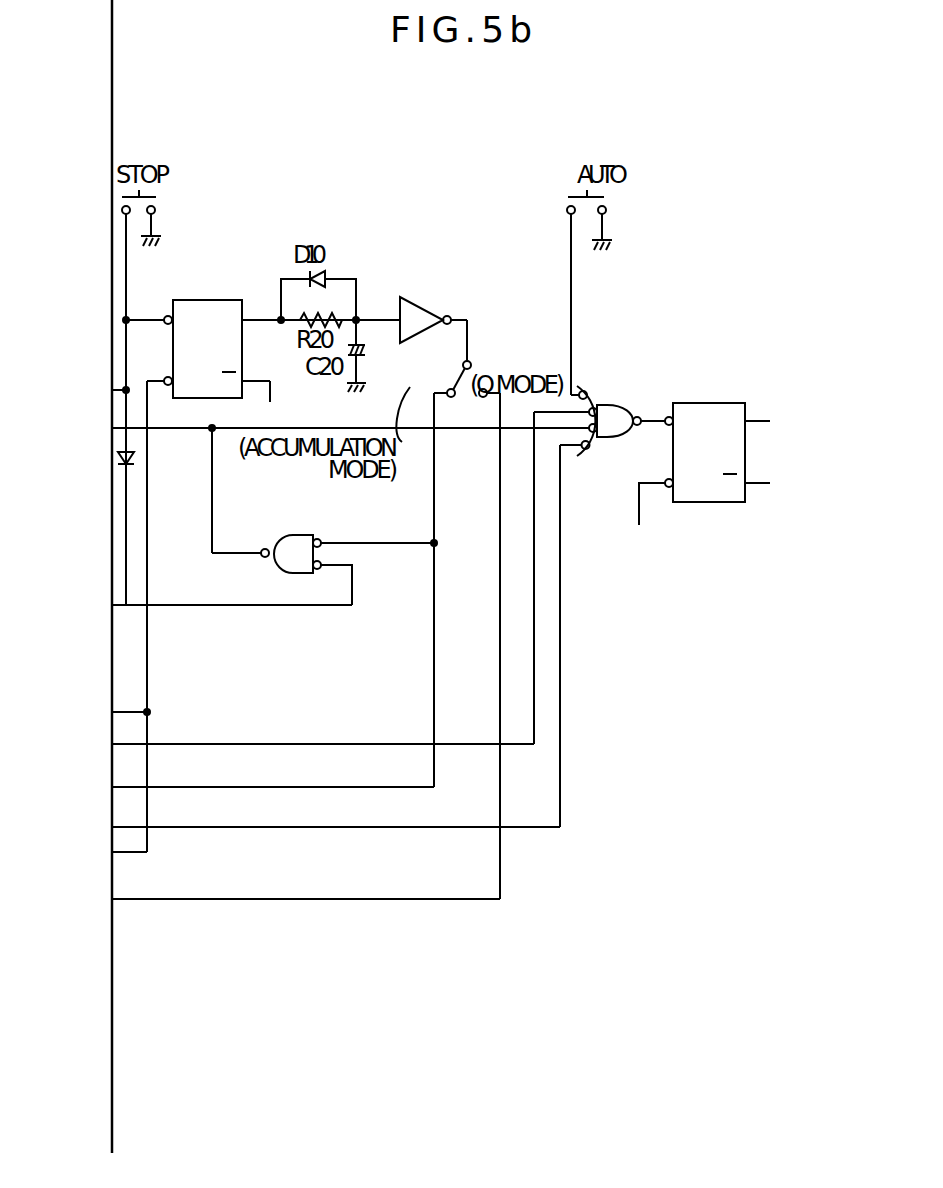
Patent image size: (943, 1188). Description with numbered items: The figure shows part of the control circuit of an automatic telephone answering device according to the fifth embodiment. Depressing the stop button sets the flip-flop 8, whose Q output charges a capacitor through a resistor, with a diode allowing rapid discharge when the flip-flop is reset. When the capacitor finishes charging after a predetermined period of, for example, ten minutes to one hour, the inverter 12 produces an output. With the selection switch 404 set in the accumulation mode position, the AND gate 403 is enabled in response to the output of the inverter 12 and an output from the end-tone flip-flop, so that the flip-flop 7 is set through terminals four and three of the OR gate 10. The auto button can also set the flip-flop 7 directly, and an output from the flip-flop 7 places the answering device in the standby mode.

The selection switch 404 is at (473, 367).
The second filter 403 is at (299, 551).
The OR gate 10 is at (607, 421).
The inverter 12 is at (427, 309).
The flip-flop 7 is at (705, 452).
The flip-flop 8 is at (203, 349).